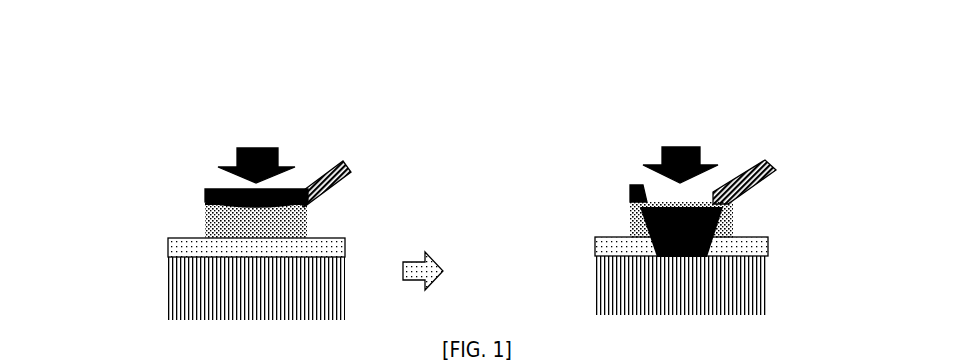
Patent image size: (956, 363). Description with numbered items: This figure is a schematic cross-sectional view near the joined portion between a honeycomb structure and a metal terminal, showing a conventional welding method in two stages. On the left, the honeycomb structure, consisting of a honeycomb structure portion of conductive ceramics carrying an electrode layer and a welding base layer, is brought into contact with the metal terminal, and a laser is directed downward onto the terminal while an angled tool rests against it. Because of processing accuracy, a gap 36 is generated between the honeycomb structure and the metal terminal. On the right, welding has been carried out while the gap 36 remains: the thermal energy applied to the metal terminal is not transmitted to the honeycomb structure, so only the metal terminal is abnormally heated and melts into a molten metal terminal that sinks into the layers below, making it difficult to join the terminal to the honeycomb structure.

The gap 36 is at (242, 207).